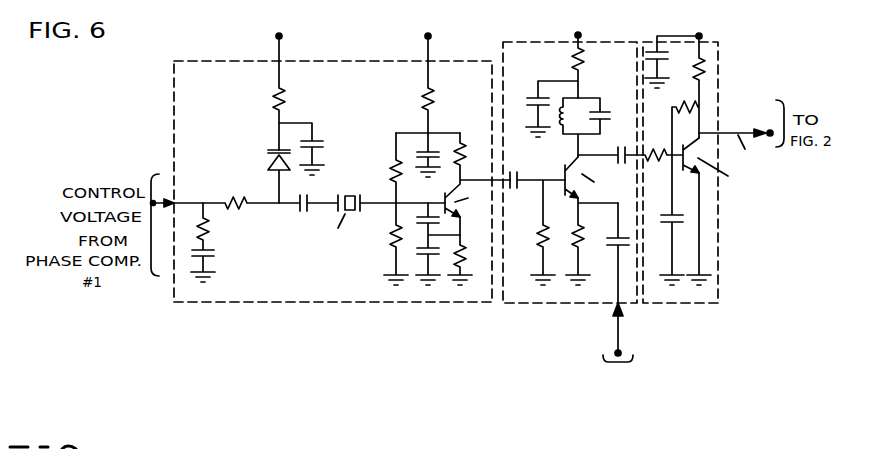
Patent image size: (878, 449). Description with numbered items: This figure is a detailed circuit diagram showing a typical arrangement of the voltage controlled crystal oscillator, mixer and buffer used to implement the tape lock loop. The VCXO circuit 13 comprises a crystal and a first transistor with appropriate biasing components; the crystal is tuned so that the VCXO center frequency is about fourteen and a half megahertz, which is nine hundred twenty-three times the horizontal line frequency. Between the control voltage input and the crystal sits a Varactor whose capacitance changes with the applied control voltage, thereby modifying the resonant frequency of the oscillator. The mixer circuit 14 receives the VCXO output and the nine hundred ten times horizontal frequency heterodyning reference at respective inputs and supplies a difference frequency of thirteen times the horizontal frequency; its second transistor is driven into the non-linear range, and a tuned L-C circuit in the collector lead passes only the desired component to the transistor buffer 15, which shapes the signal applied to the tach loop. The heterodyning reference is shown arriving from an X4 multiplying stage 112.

The voltage controlled crystal oscillator 13 is at (343, 61).
The mixer 14 is at (517, 42).
The transistor buffer 15 is at (652, 42).
The X4 multiplying stage 112 is at (665, 375).